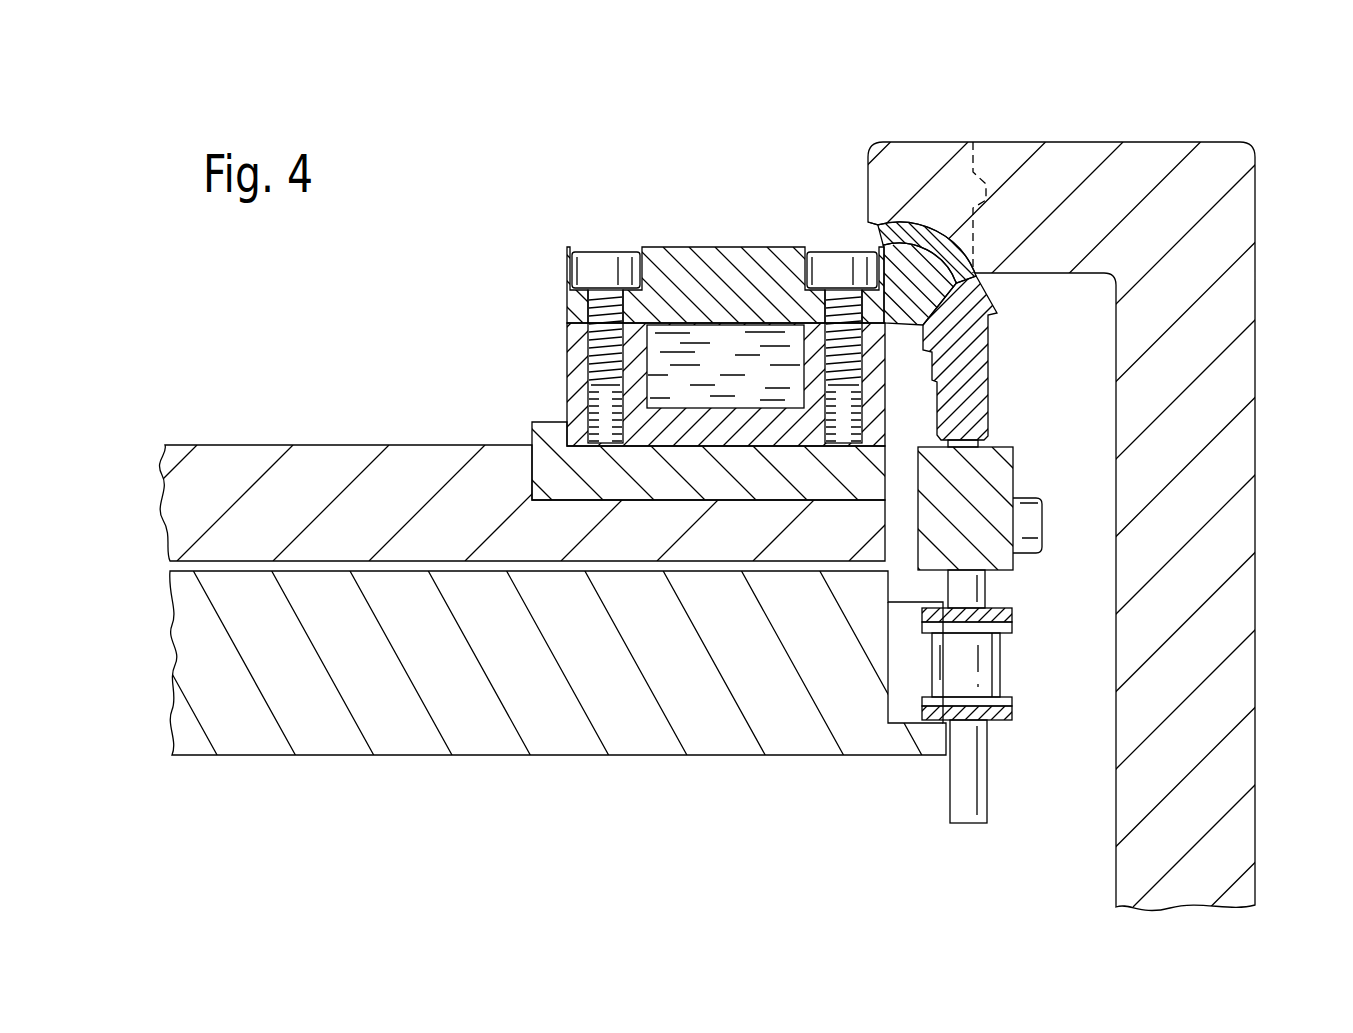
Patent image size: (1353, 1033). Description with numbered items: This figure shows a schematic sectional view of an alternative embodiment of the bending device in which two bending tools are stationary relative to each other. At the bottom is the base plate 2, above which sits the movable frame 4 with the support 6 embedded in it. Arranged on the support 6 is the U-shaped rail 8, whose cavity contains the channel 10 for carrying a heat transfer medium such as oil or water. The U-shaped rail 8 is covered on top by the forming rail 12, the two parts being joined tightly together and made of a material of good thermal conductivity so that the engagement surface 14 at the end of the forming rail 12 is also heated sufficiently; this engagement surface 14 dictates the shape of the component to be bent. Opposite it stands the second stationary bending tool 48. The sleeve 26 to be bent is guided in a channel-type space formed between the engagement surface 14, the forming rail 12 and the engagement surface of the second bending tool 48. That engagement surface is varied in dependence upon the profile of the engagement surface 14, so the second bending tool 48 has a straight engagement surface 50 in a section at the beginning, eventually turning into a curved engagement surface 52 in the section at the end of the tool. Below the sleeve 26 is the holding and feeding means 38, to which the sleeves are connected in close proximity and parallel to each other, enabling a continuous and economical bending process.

The base plate 2 is at (224, 662).
The movable frame 4 is at (208, 516).
The support 6 is at (550, 470).
The U-shaped rail 8 is at (576, 402).
The channel 10 is at (658, 358).
The forming rail 12 is at (668, 265).
The engagement surface 14 is at (938, 264).
The sleeve 26 is at (1000, 333).
The holding and feeding means 38 is at (1020, 570).
The second stationary bending tool 48 is at (1203, 568).
The straight engagement surface 50 is at (963, 222).
The curved engagement surface 52 is at (911, 222).